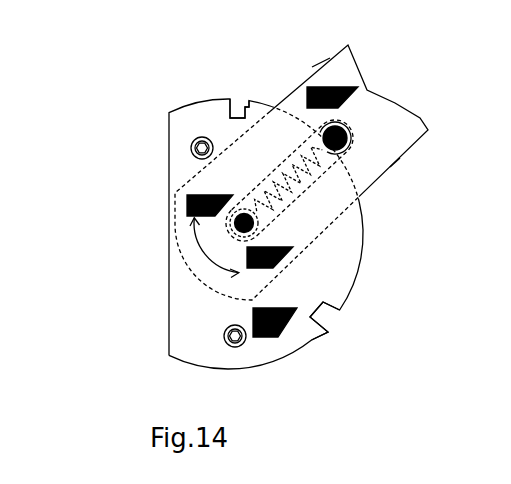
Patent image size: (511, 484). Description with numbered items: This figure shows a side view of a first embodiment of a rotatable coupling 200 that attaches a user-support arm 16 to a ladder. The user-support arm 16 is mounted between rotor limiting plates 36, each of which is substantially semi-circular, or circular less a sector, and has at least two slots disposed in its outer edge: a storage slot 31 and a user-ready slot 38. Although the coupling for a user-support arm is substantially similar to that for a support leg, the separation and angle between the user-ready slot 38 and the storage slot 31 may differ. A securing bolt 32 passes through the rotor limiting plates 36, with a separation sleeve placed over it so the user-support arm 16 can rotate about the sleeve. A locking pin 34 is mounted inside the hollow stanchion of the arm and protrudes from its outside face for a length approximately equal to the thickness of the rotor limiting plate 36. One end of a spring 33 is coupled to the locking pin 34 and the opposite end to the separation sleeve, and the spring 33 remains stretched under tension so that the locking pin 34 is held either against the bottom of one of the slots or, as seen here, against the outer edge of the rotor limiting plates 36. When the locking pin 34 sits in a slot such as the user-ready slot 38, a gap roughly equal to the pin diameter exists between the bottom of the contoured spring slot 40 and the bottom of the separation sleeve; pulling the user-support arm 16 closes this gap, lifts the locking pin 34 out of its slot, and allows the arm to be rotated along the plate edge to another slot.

The rotatable coupling 200 is at (266, 234).
The user-ready slot 38 is at (235, 112).
The user-support arm 16 is at (337, 79).
The contoured spring slot 40 is at (323, 175).
The spring 33 is at (270, 203).
The locking pin 34 is at (347, 146).
The securing bolt 32 is at (253, 226).
The rotor limiting plate 36 is at (308, 272).
The storage slot 31 is at (330, 318).